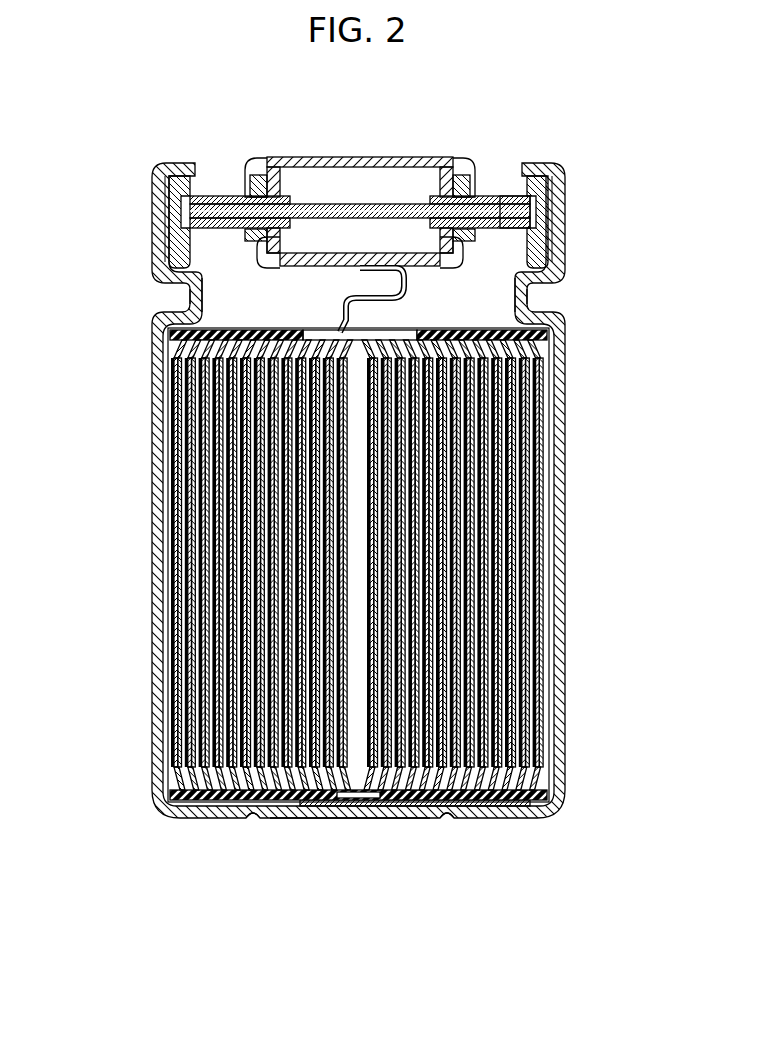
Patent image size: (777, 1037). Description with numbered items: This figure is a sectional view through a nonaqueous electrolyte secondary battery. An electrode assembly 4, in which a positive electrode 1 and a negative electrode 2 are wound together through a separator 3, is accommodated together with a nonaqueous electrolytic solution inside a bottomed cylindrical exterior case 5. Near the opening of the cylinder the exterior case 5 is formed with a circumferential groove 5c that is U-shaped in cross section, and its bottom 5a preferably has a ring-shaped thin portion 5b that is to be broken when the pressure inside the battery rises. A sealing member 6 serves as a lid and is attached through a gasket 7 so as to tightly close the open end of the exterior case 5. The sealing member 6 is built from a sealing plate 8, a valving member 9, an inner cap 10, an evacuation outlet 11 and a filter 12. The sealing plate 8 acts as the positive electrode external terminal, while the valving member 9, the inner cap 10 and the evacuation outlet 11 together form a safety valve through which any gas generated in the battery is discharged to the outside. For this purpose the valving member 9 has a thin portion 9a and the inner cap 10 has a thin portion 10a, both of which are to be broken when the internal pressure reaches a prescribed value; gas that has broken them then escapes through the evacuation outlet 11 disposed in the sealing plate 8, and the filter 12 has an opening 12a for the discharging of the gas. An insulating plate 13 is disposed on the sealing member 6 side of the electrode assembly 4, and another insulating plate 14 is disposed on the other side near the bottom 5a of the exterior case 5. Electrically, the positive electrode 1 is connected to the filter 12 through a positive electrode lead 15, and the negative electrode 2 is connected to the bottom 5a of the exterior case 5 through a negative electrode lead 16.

The positive electrode 1 is at (535, 436).
The negative electrode 2 is at (530, 492).
The separator 3 is at (394, 565).
The electrode assembly 4 is at (418, 565).
The exterior case 5 is at (175, 820).
The bottom 5a is at (352, 820).
The ring-shaped thin portion 5b is at (255, 820).
The circumferential groove 5c is at (528, 300).
The sealing member 6 is at (488, 136).
The gasket 7 is at (168, 168).
The sealing plate 8 is at (382, 157).
The valving member 9 is at (345, 205).
The thin portion 9a is at (300, 205).
The inner cap 10 is at (532, 210).
The thin portion 10a is at (414, 200).
The evacuation outlet 11 is at (249, 157).
The filter 12 is at (540, 238).
The opening 12a is at (262, 252).
The insulating plate 13 is at (166, 345).
The insulating plate 14 is at (180, 798).
The positive electrode lead 15 is at (203, 300).
The negative electrode lead 16 is at (500, 806).